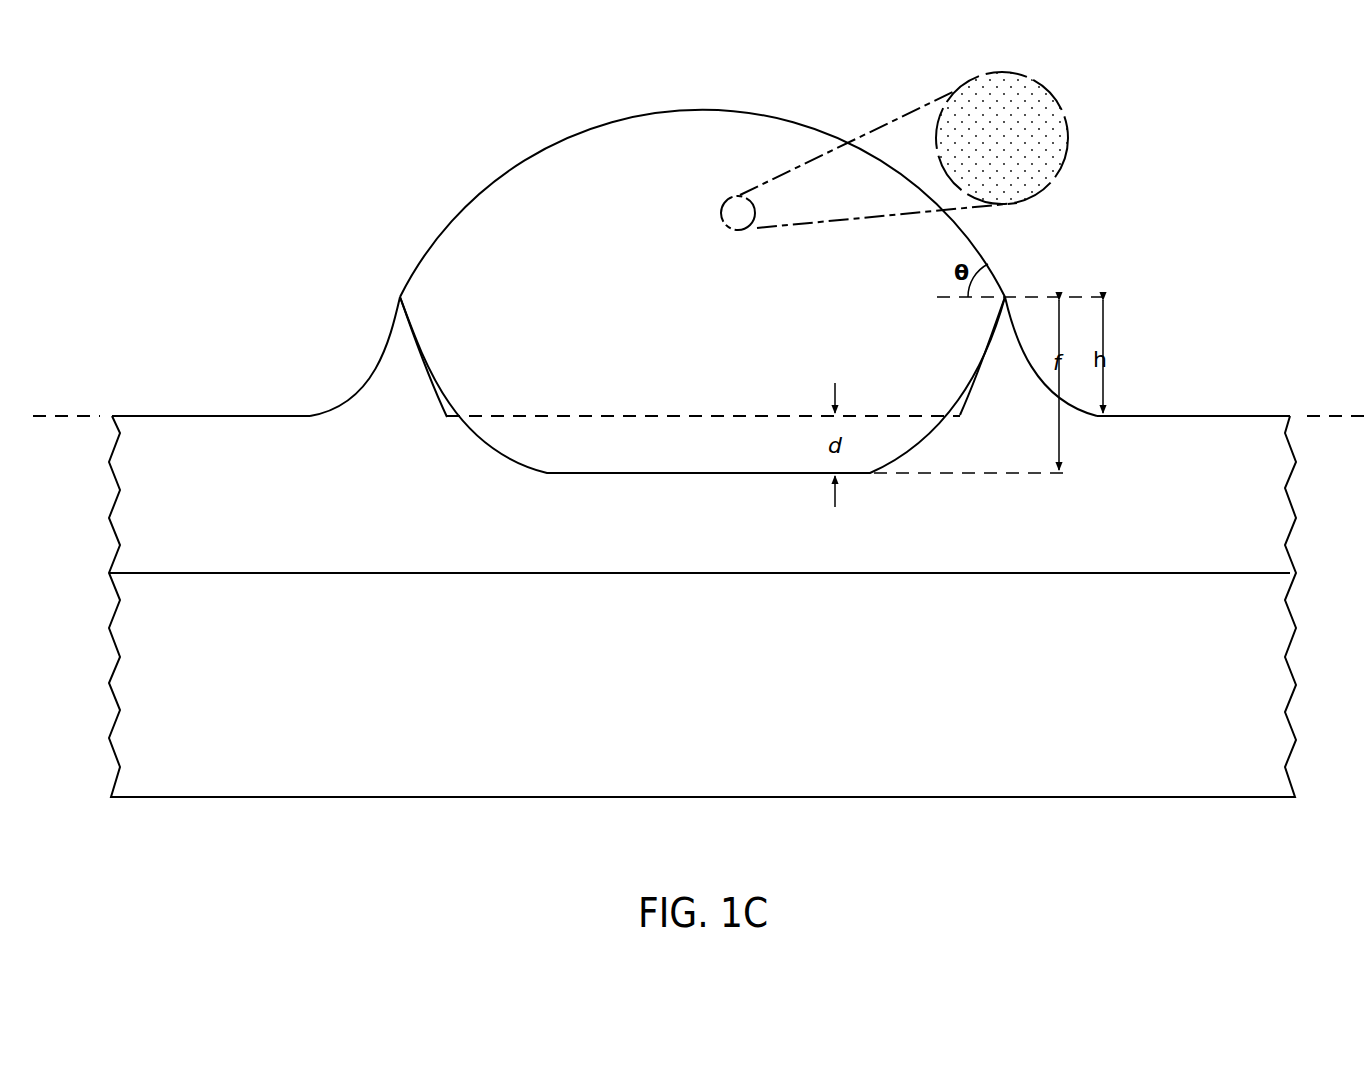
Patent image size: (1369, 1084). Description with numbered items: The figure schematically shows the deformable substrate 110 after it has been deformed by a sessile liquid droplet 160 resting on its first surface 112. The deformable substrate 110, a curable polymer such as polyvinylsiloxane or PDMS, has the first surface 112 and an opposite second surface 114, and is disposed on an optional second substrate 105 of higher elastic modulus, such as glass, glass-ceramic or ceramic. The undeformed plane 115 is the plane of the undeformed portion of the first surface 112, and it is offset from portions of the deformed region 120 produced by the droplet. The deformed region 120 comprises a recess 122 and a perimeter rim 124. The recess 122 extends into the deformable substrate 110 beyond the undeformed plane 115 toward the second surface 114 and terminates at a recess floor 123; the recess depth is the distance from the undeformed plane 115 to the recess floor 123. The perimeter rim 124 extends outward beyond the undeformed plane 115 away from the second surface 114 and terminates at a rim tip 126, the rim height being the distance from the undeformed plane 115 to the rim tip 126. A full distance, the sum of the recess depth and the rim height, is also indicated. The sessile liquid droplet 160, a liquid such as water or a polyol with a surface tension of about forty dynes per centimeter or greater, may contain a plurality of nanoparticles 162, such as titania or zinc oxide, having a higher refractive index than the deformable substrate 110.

The second substrate 105 is at (950, 799).
The deformable substrate 110 is at (1247, 413).
The first surface 112 is at (1160, 416).
The second surface 114 is at (1212, 573).
The undeformed plane 115 is at (722, 416).
The deformed region 120 is at (500, 467).
The recess 122 is at (727, 458).
The recess floor 123 is at (626, 474).
The perimeter rim 124 is at (410, 358).
The rim tip 126 is at (400, 297).
The sessile liquid droplet 160 is at (973, 242).
The nanoparticles 162 is at (1050, 122).